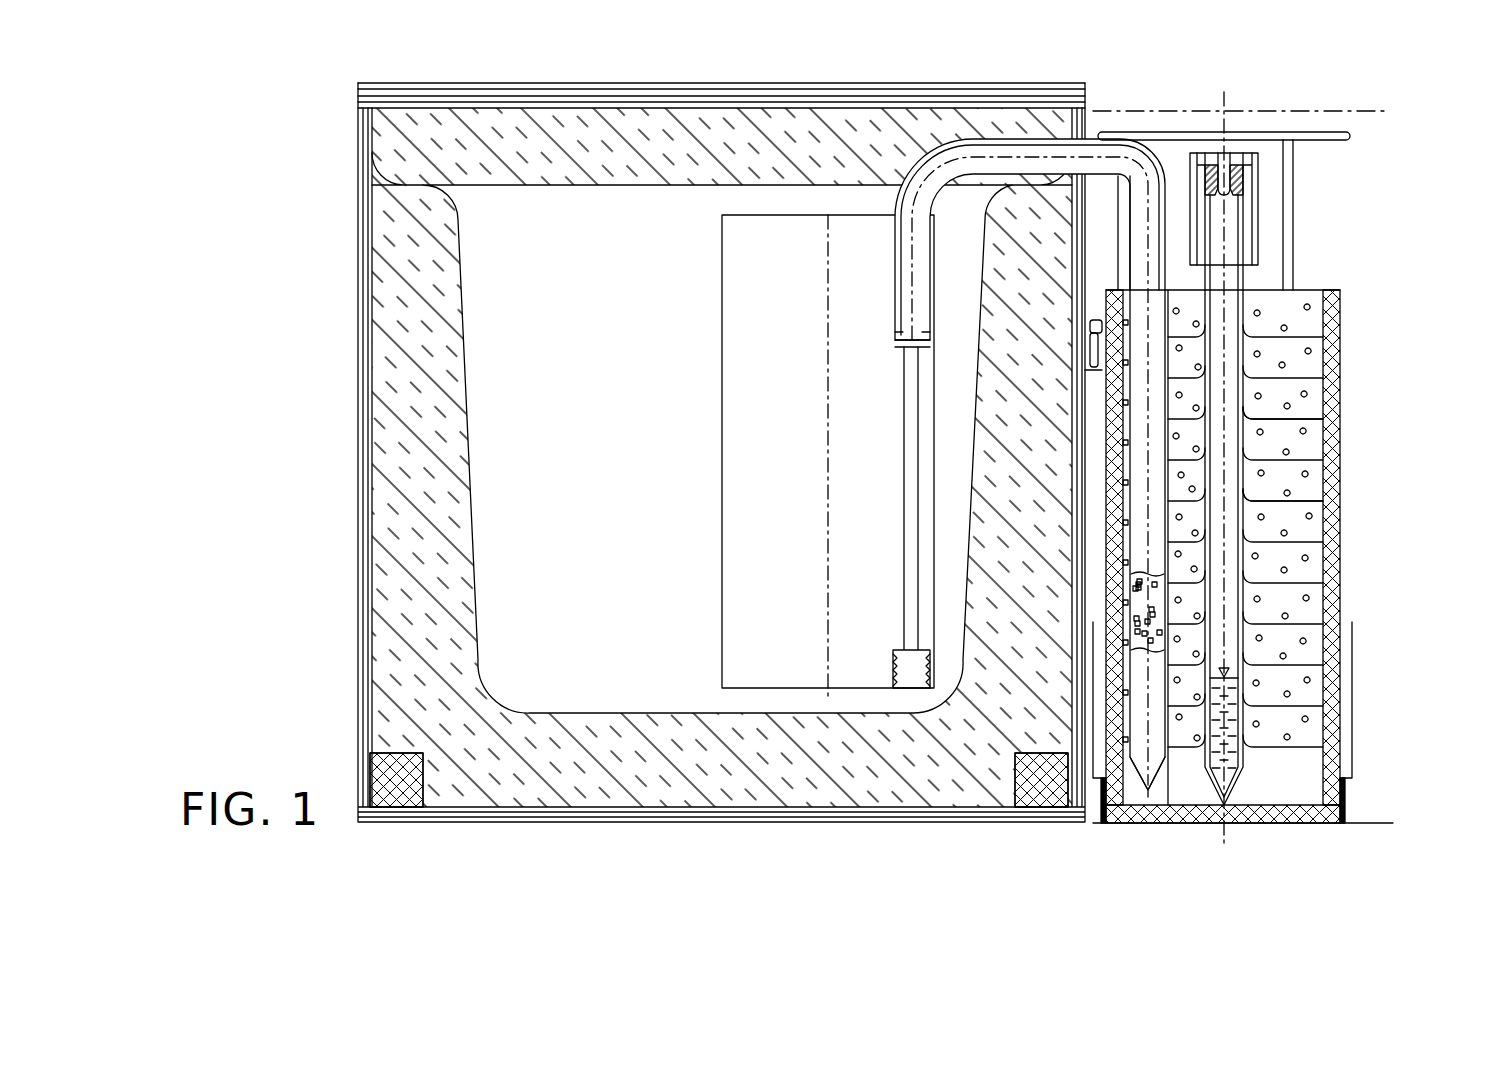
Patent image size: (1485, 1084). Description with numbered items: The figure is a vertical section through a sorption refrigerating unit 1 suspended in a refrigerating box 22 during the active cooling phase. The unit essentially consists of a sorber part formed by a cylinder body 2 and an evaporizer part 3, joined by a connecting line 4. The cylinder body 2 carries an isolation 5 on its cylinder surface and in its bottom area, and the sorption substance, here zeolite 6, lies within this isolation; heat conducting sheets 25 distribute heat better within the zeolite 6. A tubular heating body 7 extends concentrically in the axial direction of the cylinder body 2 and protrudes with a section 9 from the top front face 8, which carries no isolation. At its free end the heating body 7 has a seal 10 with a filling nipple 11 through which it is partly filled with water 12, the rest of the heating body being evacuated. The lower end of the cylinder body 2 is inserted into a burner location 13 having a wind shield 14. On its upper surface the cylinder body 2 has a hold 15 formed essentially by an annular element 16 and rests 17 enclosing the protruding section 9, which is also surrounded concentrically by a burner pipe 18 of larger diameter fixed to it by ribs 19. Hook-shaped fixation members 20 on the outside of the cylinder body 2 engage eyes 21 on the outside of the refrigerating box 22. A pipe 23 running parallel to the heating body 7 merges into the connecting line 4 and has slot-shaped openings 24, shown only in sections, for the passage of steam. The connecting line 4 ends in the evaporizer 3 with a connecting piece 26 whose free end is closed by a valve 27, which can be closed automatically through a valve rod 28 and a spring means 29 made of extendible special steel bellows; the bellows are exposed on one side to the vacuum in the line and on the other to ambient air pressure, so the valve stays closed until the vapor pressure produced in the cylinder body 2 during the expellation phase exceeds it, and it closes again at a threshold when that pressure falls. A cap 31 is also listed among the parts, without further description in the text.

The sorption refrigerating unit 1 is at (1104, 85).
The cylinder body 2 is at (1312, 398).
The evaporizer part 3 is at (752, 475).
The connecting line 4 is at (962, 152).
The isolation 5 is at (1338, 504).
The zeolite 6 is at (1315, 438).
The tubular heating body 7 is at (1230, 512).
The top front face 8 is at (1320, 292).
The section 9 is at (1240, 234).
The seal 10 is at (1243, 170).
The filling nipple 11 is at (1225, 163).
The water 12 is at (1228, 718).
The burner location 13 is at (1345, 812).
The wind shield 14 is at (1355, 722).
The hold 15 is at (1312, 253).
The annular element 16 is at (1125, 137).
The rests 17 is at (1295, 170).
The burner pipe 18 is at (1193, 163).
The ribs 19 is at (1197, 187).
The hook-shaped fixation members 20 is at (1093, 350).
The eyes 21 is at (1097, 325).
The refrigerating box 22 is at (430, 312).
The pipe 23 is at (1142, 758).
The slot-shaped openings 24 is at (1145, 580).
The heat conducting sheets 25 is at (1305, 498).
The connecting piece 26 is at (905, 285).
The valve 27 is at (905, 350).
The valve rod 28 is at (915, 483).
The spring means 29 is at (848, 457).
The cap 31 is at (685, 137).